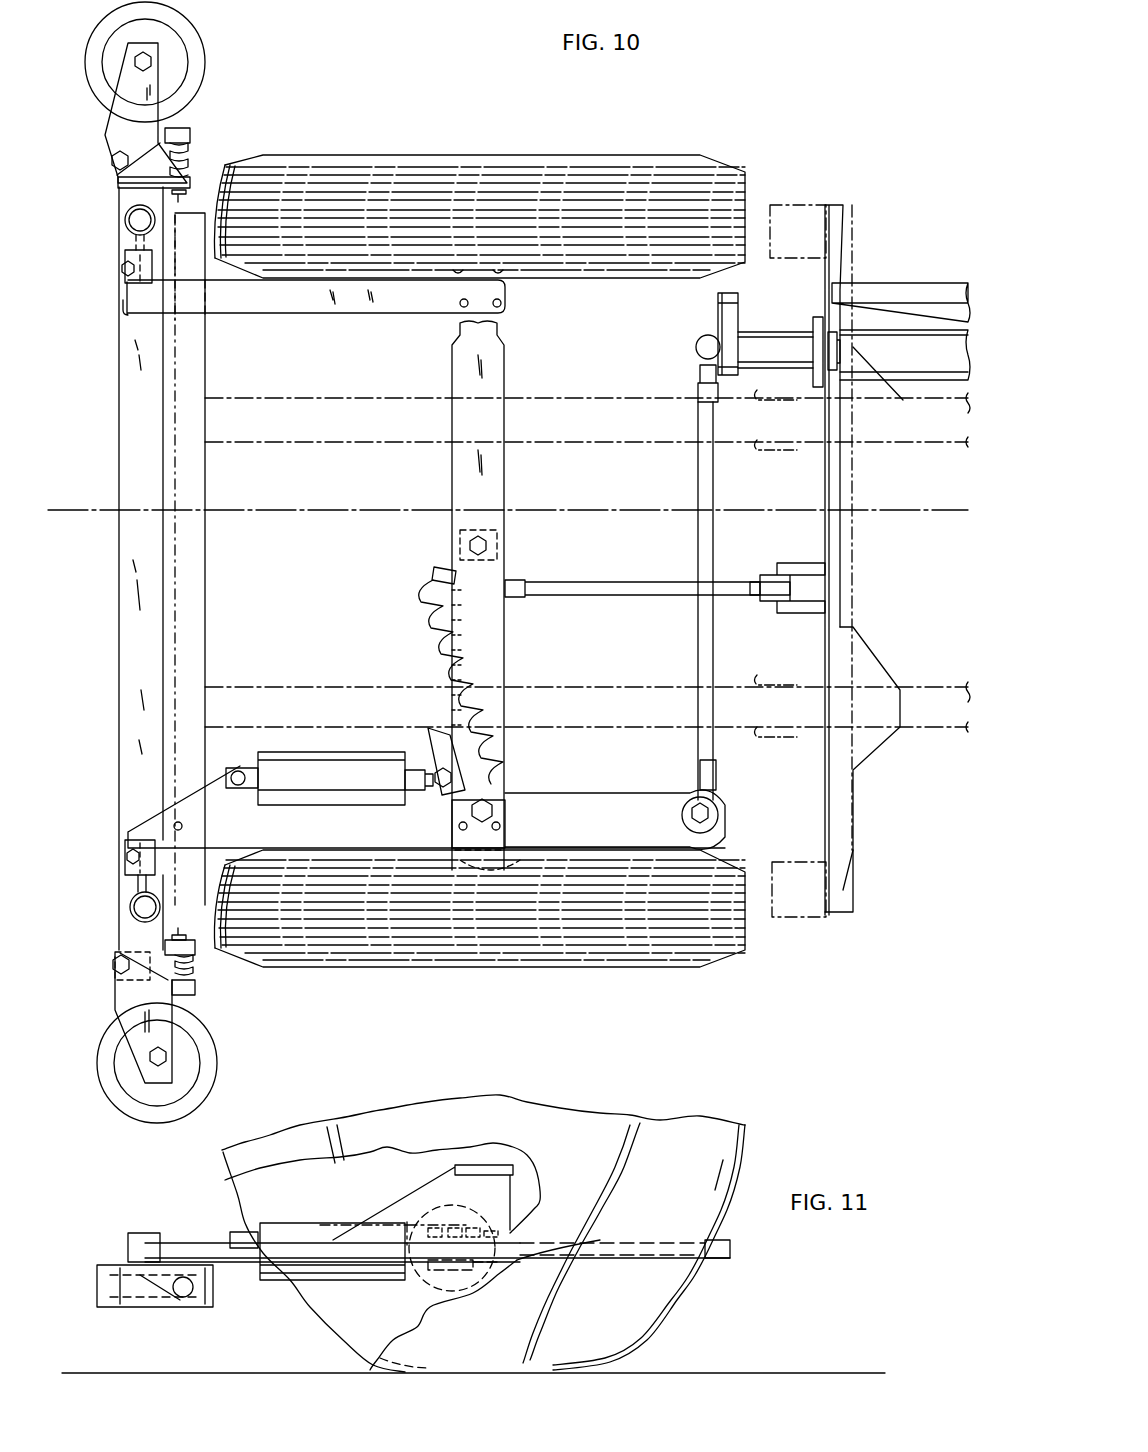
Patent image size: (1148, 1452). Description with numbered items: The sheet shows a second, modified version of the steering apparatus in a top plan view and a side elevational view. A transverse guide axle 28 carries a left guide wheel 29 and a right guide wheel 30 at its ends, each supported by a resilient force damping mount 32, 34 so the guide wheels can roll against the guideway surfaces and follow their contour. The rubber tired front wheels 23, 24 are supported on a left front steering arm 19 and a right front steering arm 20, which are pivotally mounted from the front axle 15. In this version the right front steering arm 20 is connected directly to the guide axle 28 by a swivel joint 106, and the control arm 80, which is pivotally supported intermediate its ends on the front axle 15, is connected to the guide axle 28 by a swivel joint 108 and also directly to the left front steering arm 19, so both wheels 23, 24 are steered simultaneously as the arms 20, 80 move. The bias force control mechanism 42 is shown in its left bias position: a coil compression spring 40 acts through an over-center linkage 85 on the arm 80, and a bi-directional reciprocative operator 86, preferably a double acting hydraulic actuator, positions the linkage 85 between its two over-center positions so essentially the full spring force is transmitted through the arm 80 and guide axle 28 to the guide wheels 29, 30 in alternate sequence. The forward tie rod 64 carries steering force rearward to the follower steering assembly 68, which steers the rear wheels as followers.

In FIG. 10, the front axle 15 is at (506, 478).
In FIG. 10, the left front steering arm 19 is at (512, 858).
In FIG. 10, the right front steering arm 20 is at (320, 315).
In FIG. 10, the left front wheel 23 is at (692, 965).
In FIG. 11, the left front wheel 23 is at (668, 1142).
In FIG. 10, the right front wheel 24 is at (705, 162).
In FIG. 10, the guide axle 28 is at (120, 630).
In FIG. 10, the left guide wheel 29 is at (200, 72).
In FIG. 10, the right guide wheel 30 is at (215, 1062).
In FIG. 11, the right guide wheel 30 is at (100, 1262).
In FIG. 10, the resilient force damping mount 32 is at (109, 971).
In FIG. 10, the resilient force damping mount 34 is at (103, 191).
In FIG. 10, the coil compression spring 40 is at (430, 632).
In FIG. 11, the coil compression spring 40 is at (425, 1280).
In FIG. 10, the bias force control mechanism 42 is at (395, 742).
In FIG. 10, the forward tie rod 64 is at (697, 548).
In FIG. 10, the follower steering assembly 68 is at (917, 334).
In FIG. 10, the steering arm 80 is at (597, 815).
In FIG. 11, the steering arm 80 is at (500, 1247).
In FIG. 10, the over-center linkage 85 is at (433, 792).
In FIG. 10, the bi-directional reciprocative operator 86 is at (298, 750).
In FIG. 11, the bi-directional reciprocative operator 86 is at (292, 1232).
In FIG. 10, the swivel joint 106 is at (128, 224).
In FIG. 10, the swivel joint 108 is at (130, 907).